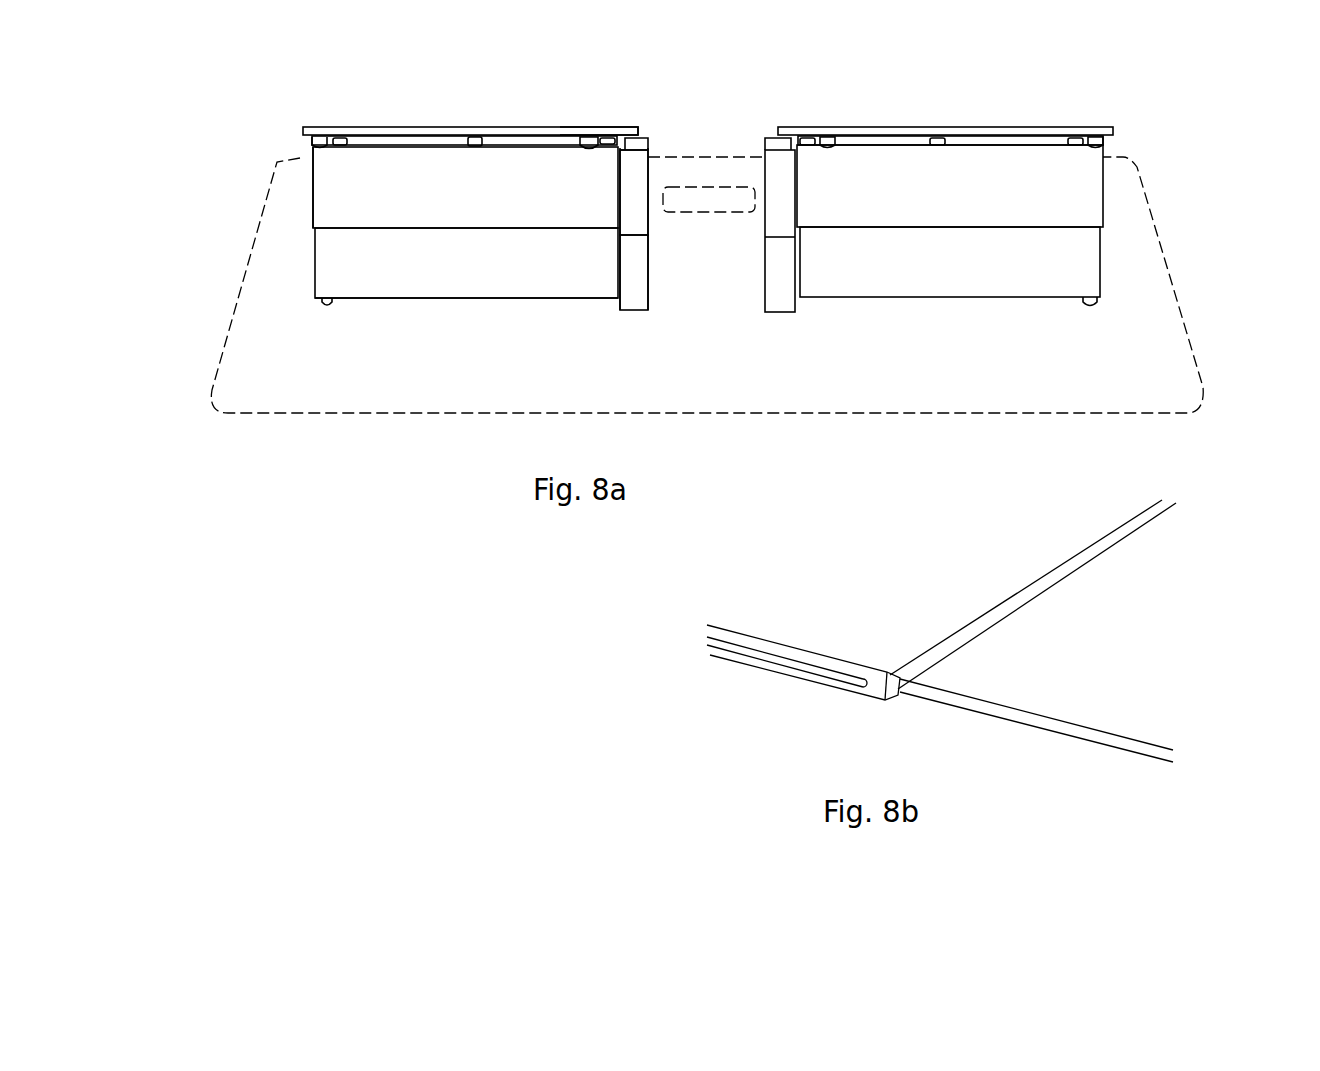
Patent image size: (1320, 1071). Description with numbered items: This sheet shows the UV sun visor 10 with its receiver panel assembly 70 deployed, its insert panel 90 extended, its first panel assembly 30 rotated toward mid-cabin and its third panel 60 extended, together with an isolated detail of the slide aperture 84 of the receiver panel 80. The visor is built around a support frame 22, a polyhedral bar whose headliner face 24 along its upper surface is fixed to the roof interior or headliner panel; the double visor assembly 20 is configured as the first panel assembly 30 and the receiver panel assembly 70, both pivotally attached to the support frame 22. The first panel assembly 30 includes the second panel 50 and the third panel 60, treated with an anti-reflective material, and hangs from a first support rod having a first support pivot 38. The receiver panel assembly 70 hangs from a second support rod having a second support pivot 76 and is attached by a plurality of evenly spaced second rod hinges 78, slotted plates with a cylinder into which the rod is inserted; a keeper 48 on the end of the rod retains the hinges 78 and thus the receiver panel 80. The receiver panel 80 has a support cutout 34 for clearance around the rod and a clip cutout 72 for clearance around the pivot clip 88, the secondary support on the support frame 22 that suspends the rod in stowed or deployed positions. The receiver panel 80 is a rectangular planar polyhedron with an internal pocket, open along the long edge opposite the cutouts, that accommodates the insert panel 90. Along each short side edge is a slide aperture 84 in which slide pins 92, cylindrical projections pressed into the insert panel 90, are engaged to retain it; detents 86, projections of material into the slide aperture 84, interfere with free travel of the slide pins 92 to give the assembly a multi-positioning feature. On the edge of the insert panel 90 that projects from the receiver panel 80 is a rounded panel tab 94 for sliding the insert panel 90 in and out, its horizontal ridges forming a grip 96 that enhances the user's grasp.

In FIG. 8A, the UV sun visor 10 is at (273, 430).
In FIG. 8A, the double visor assembly 20 is at (303, 128).
In FIG. 8A, the support frame 22 is at (613, 137).
In FIG. 8A, the headliner face 24 is at (408, 127).
In FIG. 8A, the first panel assembly 30 is at (622, 262).
In FIG. 8A, the support cutout 34 is at (320, 148).
In FIG. 8A, the first support pivot 38 is at (632, 140).
In FIG. 8A, the keeper 48 is at (650, 150).
In FIG. 8A, the second panel 50 is at (643, 208).
In FIG. 8A, the third panel 60 is at (643, 280).
In FIG. 8A, the receiver panel assembly 70 is at (313, 250).
In FIG. 8A, the clip cutout 72 is at (578, 138).
In FIG. 8A, the second support pivot 76 is at (313, 137).
In FIG. 8A, the second rod hinges 78 is at (477, 140).
In FIG. 8A, the receiver panel 80 is at (322, 192).
In FIG. 8B, the receiver panel 80 is at (713, 658).
In FIG. 8B, the slide aperture 84 is at (810, 668).
In FIG. 8B, the detents 86 is at (755, 652).
In FIG. 8A, the pivot clip 88 is at (588, 137).
In FIG. 8A, the insert panel 90 is at (518, 300).
In FIG. 8B, the insert panel 90 is at (1067, 733).
In FIG. 8B, the slide pins 92 is at (863, 688).
In FIG. 8A, the panel tab 94 is at (330, 303).
In FIG. 8A, the grip 96 is at (327, 303).